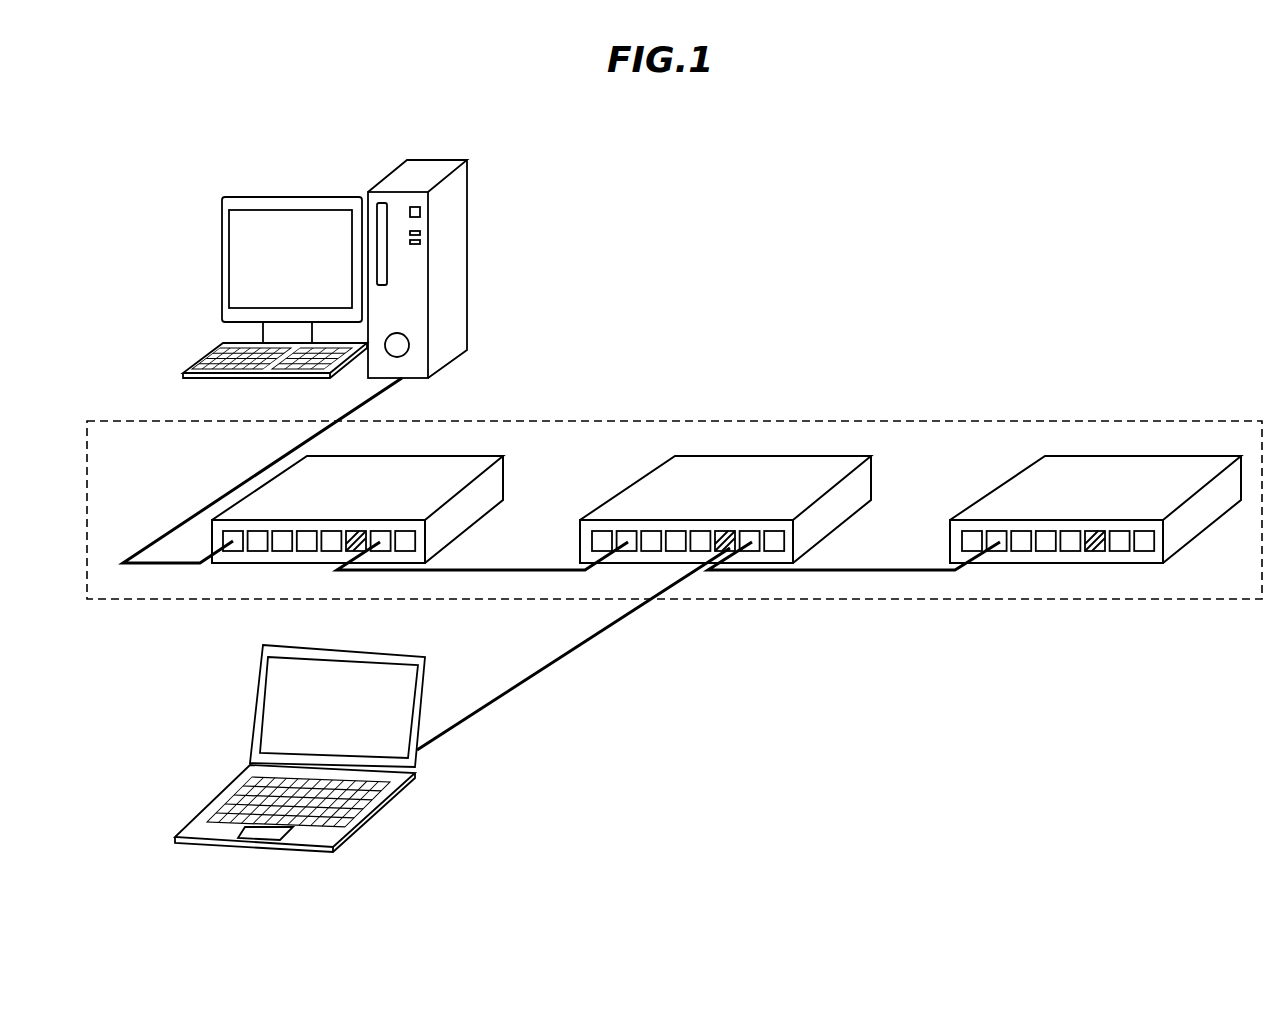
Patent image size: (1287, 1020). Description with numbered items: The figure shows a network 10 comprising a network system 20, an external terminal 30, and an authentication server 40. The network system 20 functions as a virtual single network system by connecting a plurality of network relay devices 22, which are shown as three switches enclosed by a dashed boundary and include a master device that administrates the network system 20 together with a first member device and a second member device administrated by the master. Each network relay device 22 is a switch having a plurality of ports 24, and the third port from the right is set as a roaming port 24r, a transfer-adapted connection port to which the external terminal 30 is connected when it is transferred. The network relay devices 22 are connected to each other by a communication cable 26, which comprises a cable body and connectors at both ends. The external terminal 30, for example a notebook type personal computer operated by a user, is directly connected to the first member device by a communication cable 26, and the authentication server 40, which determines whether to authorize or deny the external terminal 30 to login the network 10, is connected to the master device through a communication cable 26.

The network 10 is at (1010, 176).
The network system 20 is at (1185, 602).
The network relay device 22 is at (718, 507).
The port 24 is at (280, 542).
The roaming port 24r is at (352, 532).
The communication cable 26 is at (200, 512).
The external terminal 30 is at (338, 843).
The authentication server 40 is at (443, 160).